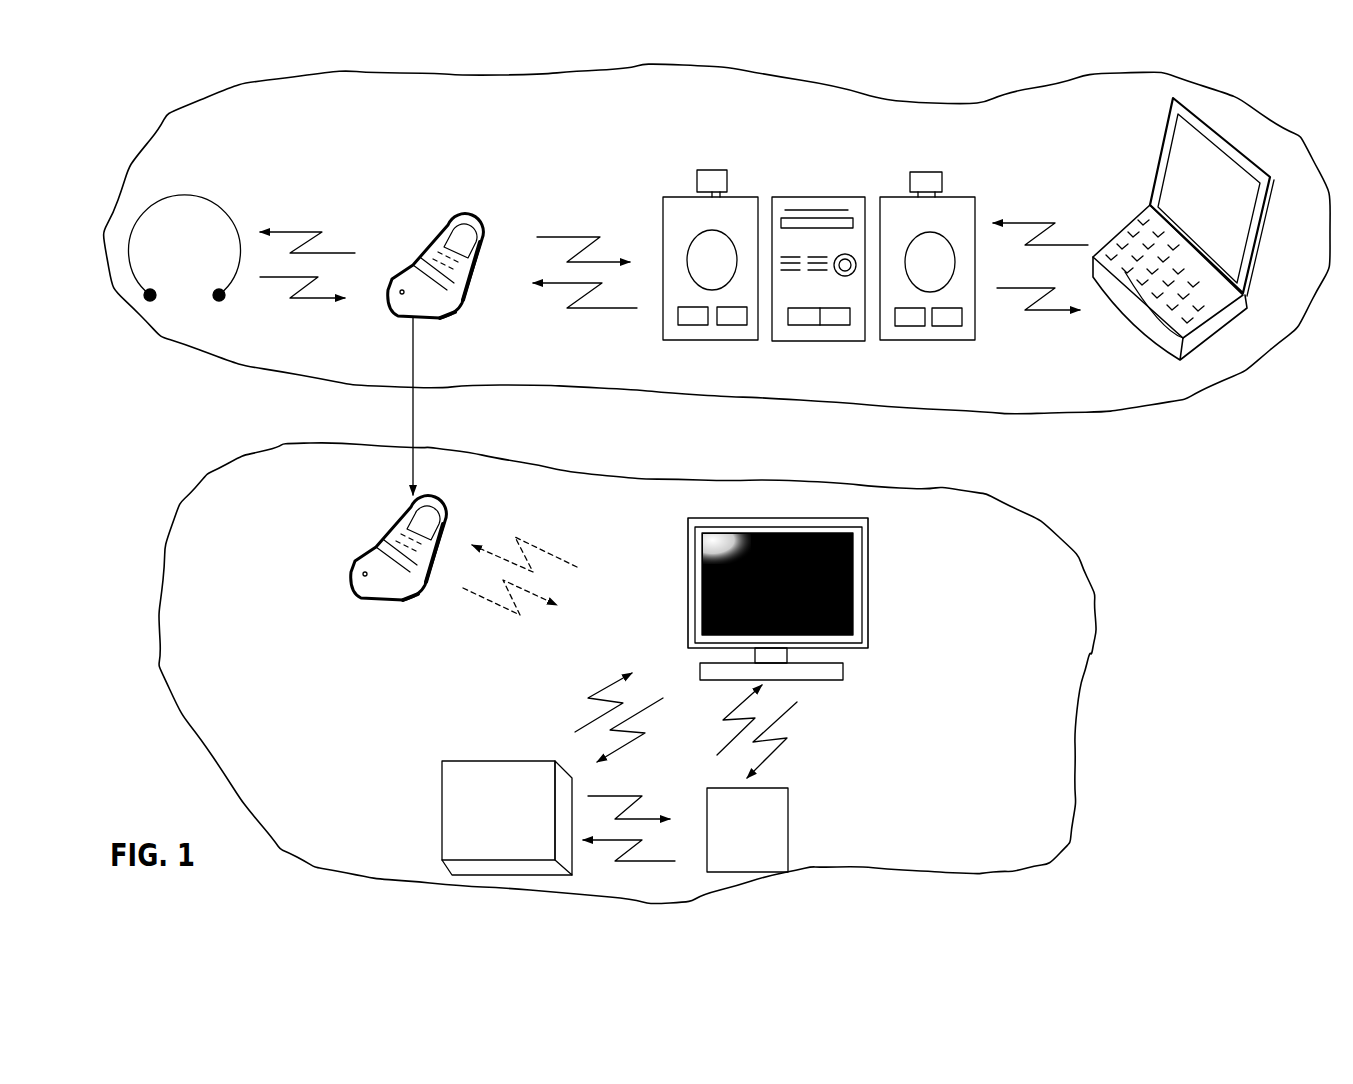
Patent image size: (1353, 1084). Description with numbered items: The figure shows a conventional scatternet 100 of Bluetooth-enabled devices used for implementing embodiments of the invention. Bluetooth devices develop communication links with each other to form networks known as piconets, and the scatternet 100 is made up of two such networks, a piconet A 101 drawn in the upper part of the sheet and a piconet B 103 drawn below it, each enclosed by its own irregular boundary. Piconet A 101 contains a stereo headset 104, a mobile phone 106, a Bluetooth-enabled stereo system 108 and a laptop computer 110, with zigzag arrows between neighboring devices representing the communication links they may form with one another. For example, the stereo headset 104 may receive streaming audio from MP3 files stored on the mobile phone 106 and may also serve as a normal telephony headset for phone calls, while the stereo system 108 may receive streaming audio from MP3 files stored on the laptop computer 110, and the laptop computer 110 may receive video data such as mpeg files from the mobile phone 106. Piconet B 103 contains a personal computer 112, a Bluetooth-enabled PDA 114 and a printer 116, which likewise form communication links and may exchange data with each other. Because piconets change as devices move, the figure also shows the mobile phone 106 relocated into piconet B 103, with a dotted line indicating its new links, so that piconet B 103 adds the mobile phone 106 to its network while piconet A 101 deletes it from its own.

The scatternet 100 is at (1188, 820).
The piconet A 101 is at (1213, 385).
The piconet B 103 is at (1087, 663).
The stereo headset 104 is at (215, 202).
The mobile phone 106 is at (480, 218).
The Bluetooth-enabled stereo system 108 is at (935, 172).
The laptop computer 110 is at (1262, 247).
The personal computer 112 is at (868, 603).
The Bluetooth-enabled PDA 114 is at (788, 825).
The printer 116 is at (442, 810).